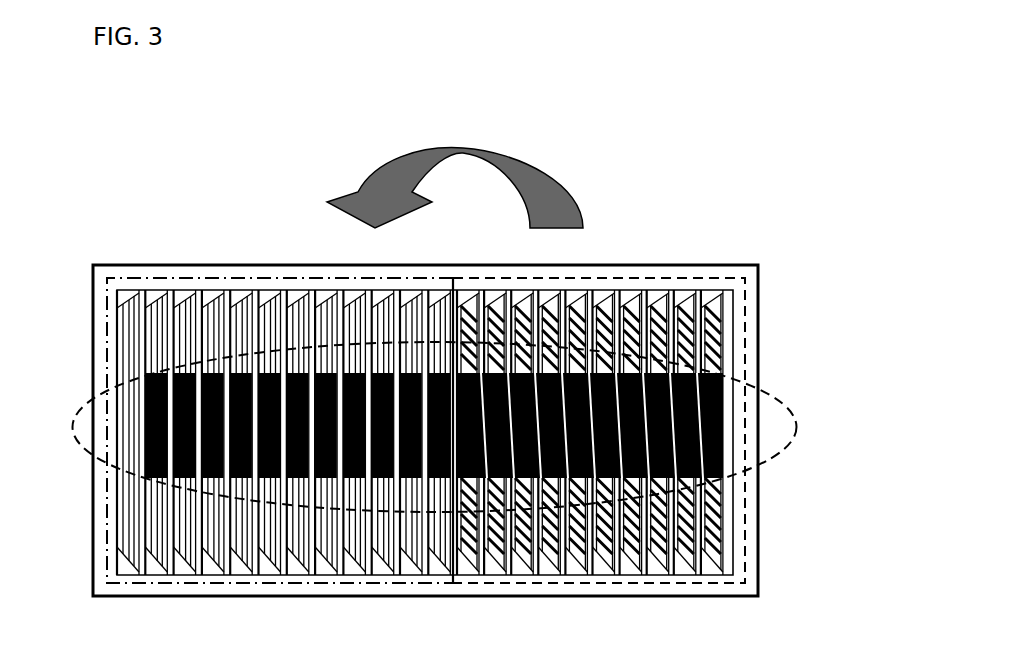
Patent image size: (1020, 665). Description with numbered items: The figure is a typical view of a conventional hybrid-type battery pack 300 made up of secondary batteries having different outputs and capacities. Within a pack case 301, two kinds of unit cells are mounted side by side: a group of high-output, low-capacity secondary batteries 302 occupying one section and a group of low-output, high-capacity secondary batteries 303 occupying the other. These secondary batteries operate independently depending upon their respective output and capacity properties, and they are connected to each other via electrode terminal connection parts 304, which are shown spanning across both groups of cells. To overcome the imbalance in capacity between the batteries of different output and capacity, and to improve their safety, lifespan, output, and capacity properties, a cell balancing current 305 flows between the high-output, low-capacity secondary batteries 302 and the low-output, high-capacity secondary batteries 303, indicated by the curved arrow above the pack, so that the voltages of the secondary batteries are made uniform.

The hybrid-type battery pack 300 is at (147, 160).
The pack case 301 is at (118, 266).
The high-output, low-capacity secondary batteries 302 is at (206, 279).
The low-output, high-capacity secondary batteries 303 is at (620, 279).
The electrode terminal connection parts 304 is at (774, 394).
The cell balancing current 305 is at (455, 174).